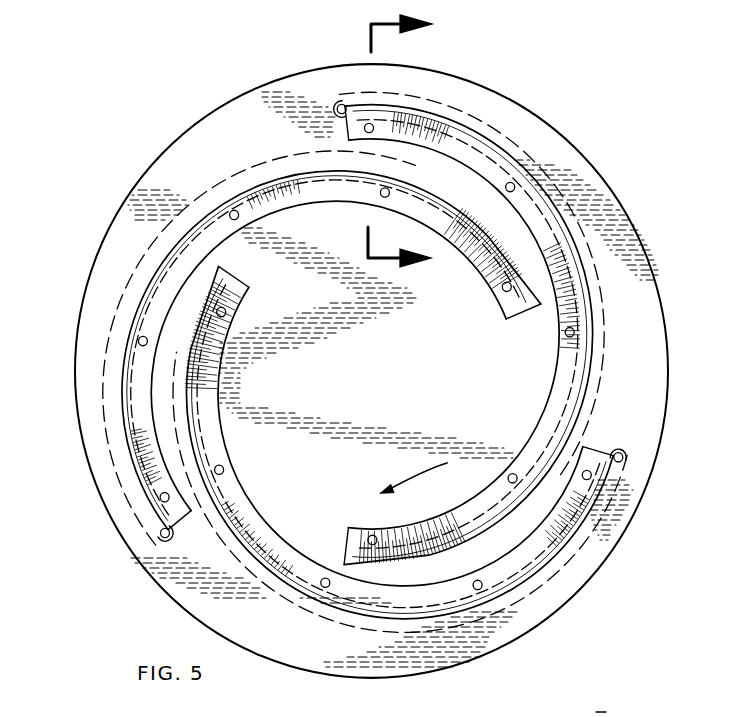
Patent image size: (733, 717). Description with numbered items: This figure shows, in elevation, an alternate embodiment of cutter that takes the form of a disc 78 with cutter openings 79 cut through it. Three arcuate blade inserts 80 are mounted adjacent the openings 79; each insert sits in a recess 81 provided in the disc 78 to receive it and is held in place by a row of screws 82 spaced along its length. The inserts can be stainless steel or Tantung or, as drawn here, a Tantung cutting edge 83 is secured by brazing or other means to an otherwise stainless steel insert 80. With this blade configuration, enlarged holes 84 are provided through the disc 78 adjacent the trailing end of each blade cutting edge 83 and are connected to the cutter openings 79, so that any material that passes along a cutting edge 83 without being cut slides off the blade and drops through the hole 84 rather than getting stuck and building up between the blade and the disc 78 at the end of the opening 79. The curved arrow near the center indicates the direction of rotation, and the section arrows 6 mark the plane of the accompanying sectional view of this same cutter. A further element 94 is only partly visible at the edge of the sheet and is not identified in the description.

The disc 78 is at (561, 146).
The cutter openings 79 is at (507, 132).
The blade inserts 80 is at (457, 137).
The recesses 81 is at (348, 546).
The screws 82 is at (138, 338).
The cutting edge 83 is at (237, 193).
The enlarged holes 84 is at (339, 101).
The element 94 is at (614, 707).
The section line 6- 6 is at (409, 144).